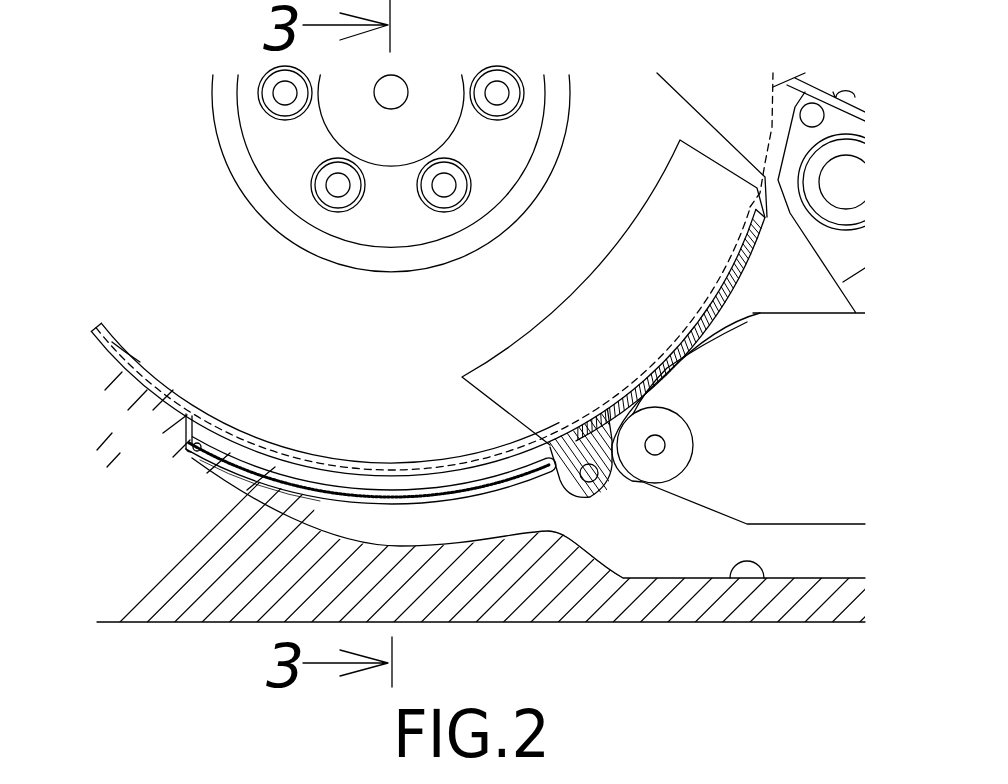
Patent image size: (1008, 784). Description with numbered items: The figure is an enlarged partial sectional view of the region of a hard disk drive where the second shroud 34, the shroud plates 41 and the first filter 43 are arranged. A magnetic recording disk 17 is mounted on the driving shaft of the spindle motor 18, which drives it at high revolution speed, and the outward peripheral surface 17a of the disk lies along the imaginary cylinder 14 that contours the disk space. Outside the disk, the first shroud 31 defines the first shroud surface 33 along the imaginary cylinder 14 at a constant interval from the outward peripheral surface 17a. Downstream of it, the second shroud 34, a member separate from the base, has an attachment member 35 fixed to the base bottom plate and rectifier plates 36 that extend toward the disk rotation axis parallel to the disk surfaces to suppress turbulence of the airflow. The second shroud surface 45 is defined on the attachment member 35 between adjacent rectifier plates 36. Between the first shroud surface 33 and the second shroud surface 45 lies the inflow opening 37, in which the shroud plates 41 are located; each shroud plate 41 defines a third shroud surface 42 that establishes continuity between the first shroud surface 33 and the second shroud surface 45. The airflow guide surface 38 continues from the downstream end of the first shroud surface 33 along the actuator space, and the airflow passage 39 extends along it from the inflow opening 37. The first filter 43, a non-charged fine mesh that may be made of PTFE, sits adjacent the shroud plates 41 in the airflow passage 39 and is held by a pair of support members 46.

The imaginary cylinder 14 is at (787, 85).
The magnetic recording disk 17 is at (123, 370).
The outward peripheral surface 17a is at (112, 342).
The spindle motor 18 is at (320, 123).
The first shroud 31 is at (130, 433).
The first shroud surface 33 is at (172, 405).
The second shroud 34 is at (727, 302).
The attachment member 35 is at (615, 477).
The rectifier plate 36 is at (668, 162).
The inflow opening 37 is at (192, 417).
The airflow guide surface 38 is at (762, 580).
The airflow passage 39 is at (652, 553).
The shroud plate 41 is at (438, 477).
The third shroud surface 42 is at (200, 460).
The first filter 43 is at (297, 493).
The second shroud surface 45 is at (690, 352).
The support member 46 is at (550, 477).